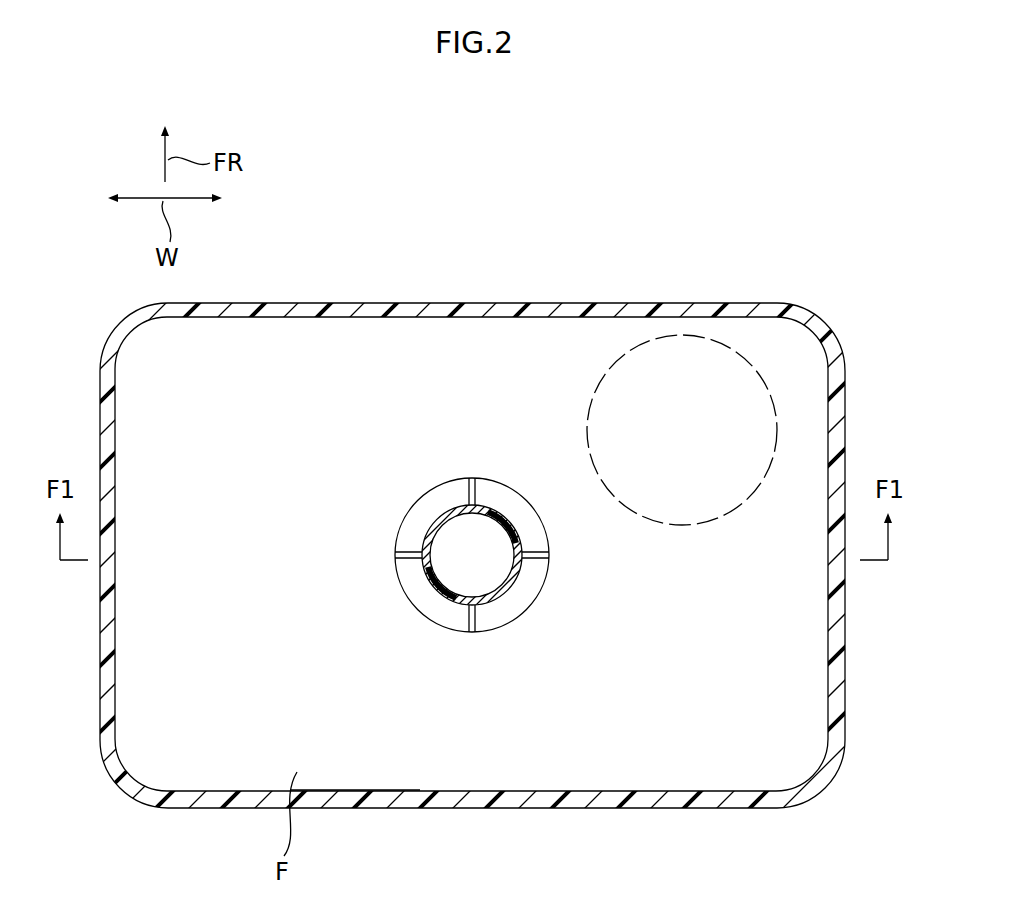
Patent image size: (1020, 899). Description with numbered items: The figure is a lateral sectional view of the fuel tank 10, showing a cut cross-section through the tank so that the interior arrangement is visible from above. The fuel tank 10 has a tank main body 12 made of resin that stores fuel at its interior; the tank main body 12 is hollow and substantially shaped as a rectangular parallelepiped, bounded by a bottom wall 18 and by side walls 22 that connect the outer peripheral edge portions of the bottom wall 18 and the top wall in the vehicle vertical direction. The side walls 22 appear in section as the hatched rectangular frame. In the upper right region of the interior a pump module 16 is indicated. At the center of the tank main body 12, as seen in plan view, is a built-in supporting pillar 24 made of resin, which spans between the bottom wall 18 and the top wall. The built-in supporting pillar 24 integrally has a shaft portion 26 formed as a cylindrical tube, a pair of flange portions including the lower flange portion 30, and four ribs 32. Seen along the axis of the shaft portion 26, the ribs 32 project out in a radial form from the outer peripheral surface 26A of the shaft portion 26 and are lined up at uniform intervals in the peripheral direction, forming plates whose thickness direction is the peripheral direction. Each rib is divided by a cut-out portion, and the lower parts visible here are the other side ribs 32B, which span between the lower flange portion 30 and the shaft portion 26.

The fuel tank 10 is at (510, 449).
The tank main body 12 is at (510, 449).
The pump module 16 is at (597, 392).
The bottom wall 18 is at (358, 772).
The side walls 22 is at (384, 300).
The built-in supporting pillar 24 is at (477, 547).
The shaft portion 26 is at (472, 535).
The outer peripheral surface 26A is at (500, 512).
The lower flange portion 30 is at (421, 510).
The ribs 32 is at (477, 547).
The other side rib 32B is at (505, 660).